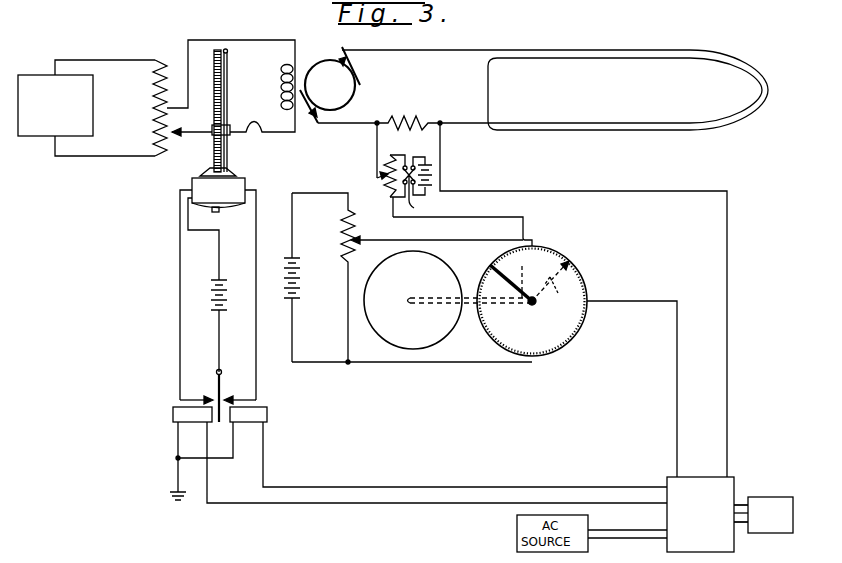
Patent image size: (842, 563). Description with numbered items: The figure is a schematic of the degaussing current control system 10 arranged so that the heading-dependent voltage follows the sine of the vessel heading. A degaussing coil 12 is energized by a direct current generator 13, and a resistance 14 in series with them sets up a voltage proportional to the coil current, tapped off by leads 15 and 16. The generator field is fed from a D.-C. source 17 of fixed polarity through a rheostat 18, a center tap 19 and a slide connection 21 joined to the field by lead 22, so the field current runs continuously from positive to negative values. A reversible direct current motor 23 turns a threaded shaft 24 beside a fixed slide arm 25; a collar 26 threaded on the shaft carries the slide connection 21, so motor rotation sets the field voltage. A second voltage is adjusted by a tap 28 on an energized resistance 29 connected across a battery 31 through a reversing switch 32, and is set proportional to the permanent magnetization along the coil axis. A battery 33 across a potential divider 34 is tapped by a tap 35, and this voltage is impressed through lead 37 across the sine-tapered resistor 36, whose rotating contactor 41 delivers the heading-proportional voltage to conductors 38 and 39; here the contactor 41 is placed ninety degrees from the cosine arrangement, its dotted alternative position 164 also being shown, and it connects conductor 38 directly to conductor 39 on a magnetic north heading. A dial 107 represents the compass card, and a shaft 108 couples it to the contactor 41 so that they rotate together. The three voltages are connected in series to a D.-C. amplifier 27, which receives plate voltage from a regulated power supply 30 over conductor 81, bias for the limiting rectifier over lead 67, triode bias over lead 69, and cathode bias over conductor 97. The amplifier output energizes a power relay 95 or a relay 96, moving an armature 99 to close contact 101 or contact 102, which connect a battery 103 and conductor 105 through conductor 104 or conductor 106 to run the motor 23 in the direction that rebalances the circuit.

The apparatus 10 is at (275, 558).
The degaussing coil 12 is at (693, 52).
The direct current generator 13 is at (340, 65).
The resistance 14 is at (400, 121).
The lead 15 is at (443, 162).
The lead 16 is at (377, 158).
The D.-C. source 17 is at (86, 108).
The rheostat 18 is at (153, 93).
The center tap 19 is at (253, 40).
The slide connection 21 is at (186, 134).
The lead 22 is at (295, 132).
The reversible direct current motor 23 is at (255, 172).
The threaded shaft 24 is at (216, 84).
The fixed slide arm 25 is at (228, 84).
The collar 26 is at (212, 128).
The amplifier 27 is at (697, 477).
The tap 28 is at (383, 177).
The energized resistance 29 is at (390, 154).
The D.-C. power supply 30 is at (768, 522).
The battery 31 is at (430, 158).
The reversing switch 32 is at (412, 200).
The battery 33 is at (295, 259).
The potential divider 34 is at (343, 233).
The tap 35 is at (358, 244).
The sine-tapered resistor 36 is at (582, 279).
The lead 37 is at (456, 362).
The conductor 38 is at (527, 234).
The conductor 39 is at (678, 391).
The rotating contactor 41 is at (535, 293).
The lead 67 is at (734, 525).
The lead 69 is at (745, 527).
The conductor 81 is at (734, 506).
The power relay 95 is at (267, 413).
The relay 96 is at (173, 413).
The conductor 97 is at (741, 506).
The armature 99 is at (220, 426).
The contact 101 is at (232, 397).
The contact 102 is at (208, 397).
The battery 103 is at (222, 318).
The conductor 104 is at (258, 392).
The conductor 105 is at (221, 274).
The conductor 106 is at (180, 343).
The dial 107 is at (380, 274).
The shaft 108 is at (472, 297).
The pointer 164 is at (569, 260).